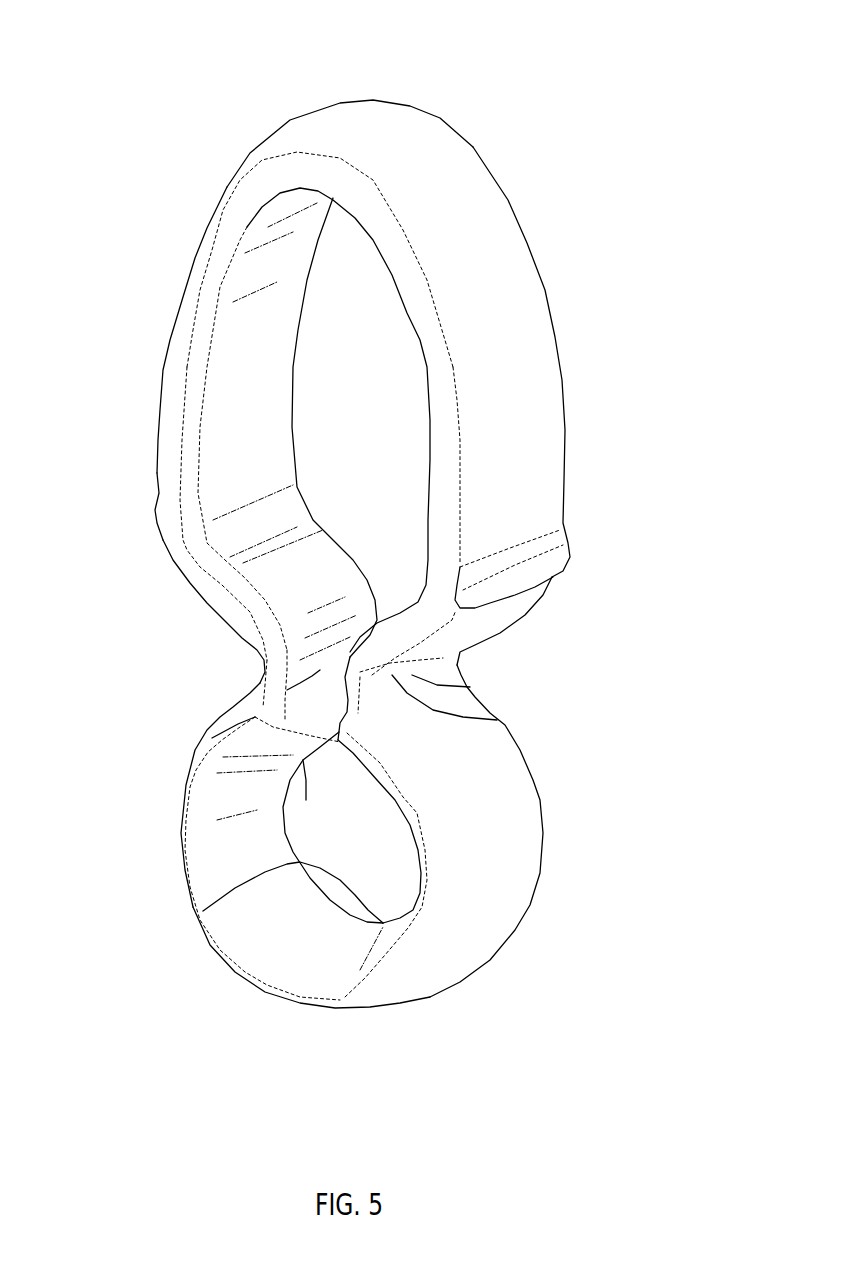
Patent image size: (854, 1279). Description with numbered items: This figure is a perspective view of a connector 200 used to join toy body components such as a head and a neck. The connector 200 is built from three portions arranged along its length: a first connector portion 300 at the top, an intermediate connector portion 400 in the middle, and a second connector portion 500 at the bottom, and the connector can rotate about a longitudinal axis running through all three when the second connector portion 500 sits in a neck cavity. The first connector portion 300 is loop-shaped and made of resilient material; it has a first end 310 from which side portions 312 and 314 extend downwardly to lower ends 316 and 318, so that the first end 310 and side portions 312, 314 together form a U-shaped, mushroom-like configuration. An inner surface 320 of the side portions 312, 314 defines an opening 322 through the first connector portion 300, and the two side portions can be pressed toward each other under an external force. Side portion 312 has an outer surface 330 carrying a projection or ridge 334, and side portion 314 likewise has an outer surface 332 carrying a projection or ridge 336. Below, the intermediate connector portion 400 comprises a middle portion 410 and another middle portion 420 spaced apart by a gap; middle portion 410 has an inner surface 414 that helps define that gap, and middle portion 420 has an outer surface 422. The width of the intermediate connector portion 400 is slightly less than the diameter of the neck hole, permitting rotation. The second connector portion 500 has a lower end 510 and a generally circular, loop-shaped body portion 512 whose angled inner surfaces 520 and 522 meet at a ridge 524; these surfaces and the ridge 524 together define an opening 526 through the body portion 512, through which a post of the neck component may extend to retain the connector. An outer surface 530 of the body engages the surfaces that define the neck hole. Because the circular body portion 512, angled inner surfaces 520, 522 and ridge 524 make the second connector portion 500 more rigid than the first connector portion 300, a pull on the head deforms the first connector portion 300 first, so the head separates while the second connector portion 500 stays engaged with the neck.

The connector 200 is at (563, 88).
The first connector portion 300 is at (349, 357).
The first end 310 is at (366, 130).
The side portion 312 is at (182, 303).
The side portion 314 is at (508, 363).
The lower end 316 is at (232, 598).
The lower end 318 is at (440, 623).
The inner surface 320 is at (247, 405).
The opening 322 is at (375, 352).
The outer surface 330 is at (206, 228).
The outer surface 332 is at (534, 427).
The projection or ridge 334 is at (172, 519).
The projection or ridge 336 is at (532, 566).
The intermediate connector portion 400 is at (420, 675).
The middle portion 410 is at (278, 653).
The inner surface 414 is at (287, 690).
The middle portion 420 is at (470, 687).
The outer surface 422 is at (553, 672).
The second connector portion 500 is at (372, 867).
The lower end 510 is at (338, 1008).
The body portion 512 is at (504, 830).
The angled inner surface 520 is at (235, 838).
The angled inner surface 522 is at (325, 889).
The ridge 524 is at (203, 911).
The opening 526 is at (374, 834).
The outer surface 530 is at (473, 943).